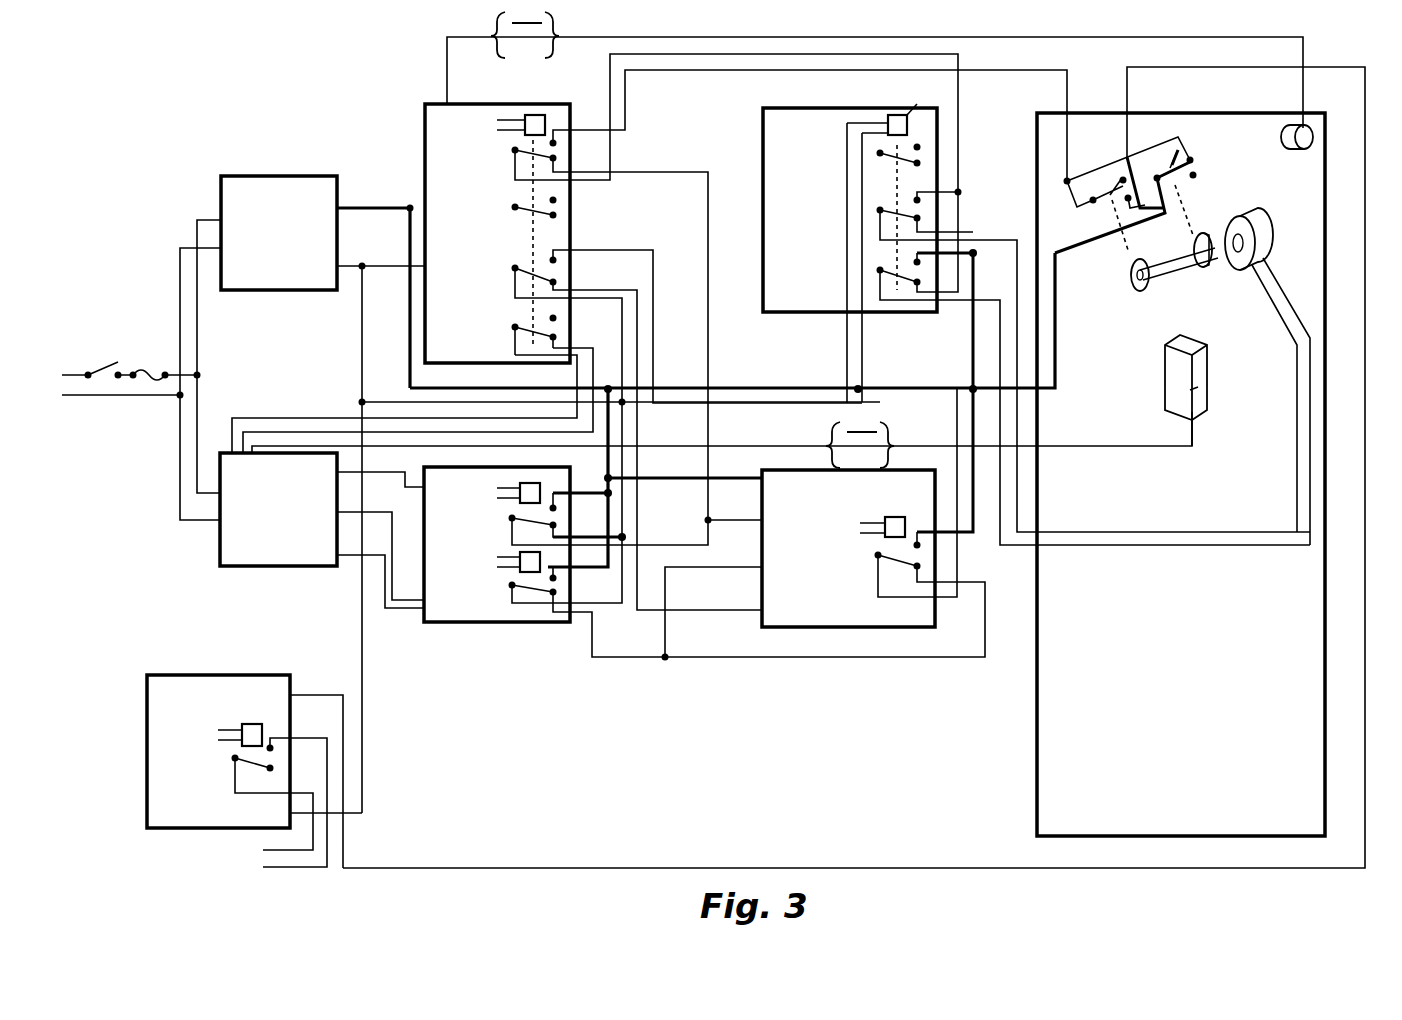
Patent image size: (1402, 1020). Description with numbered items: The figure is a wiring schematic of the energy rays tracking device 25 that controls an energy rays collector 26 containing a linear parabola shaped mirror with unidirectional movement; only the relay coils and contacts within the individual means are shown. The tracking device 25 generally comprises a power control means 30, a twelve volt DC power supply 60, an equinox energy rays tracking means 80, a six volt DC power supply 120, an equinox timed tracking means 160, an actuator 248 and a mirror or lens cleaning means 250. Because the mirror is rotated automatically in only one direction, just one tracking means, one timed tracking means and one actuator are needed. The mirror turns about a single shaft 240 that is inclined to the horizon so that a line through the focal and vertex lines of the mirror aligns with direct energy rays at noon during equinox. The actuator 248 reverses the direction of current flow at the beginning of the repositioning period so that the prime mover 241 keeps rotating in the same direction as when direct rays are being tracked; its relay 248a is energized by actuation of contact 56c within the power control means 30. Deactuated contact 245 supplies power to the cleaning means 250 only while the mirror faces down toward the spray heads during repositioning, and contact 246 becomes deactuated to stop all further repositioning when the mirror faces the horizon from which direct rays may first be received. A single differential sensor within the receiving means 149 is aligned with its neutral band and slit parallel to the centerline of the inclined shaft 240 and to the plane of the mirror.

The energy rays tracking device 25 is at (972, 872).
The energy rays collector 26 is at (1040, 838).
The power control means 30 is at (427, 102).
The contact 56c is at (508, 284).
The 12 volt DC power supply 60 is at (258, 173).
The equinox energy rays tracking means 80 is at (416, 630).
The 6 volt DC power supply 120 is at (220, 543).
The receiving means 149 is at (1208, 380).
The equinox timed tracking means 160 is at (762, 627).
The shaft 240 is at (1176, 274).
The prime mover 241 is at (1243, 197).
The contact 245 is at (1108, 157).
The contact 246 is at (1173, 139).
The actuator 248 is at (1011, 315).
The relay 248a is at (915, 107).
The mirror or lens cleaning means 250 is at (202, 676).